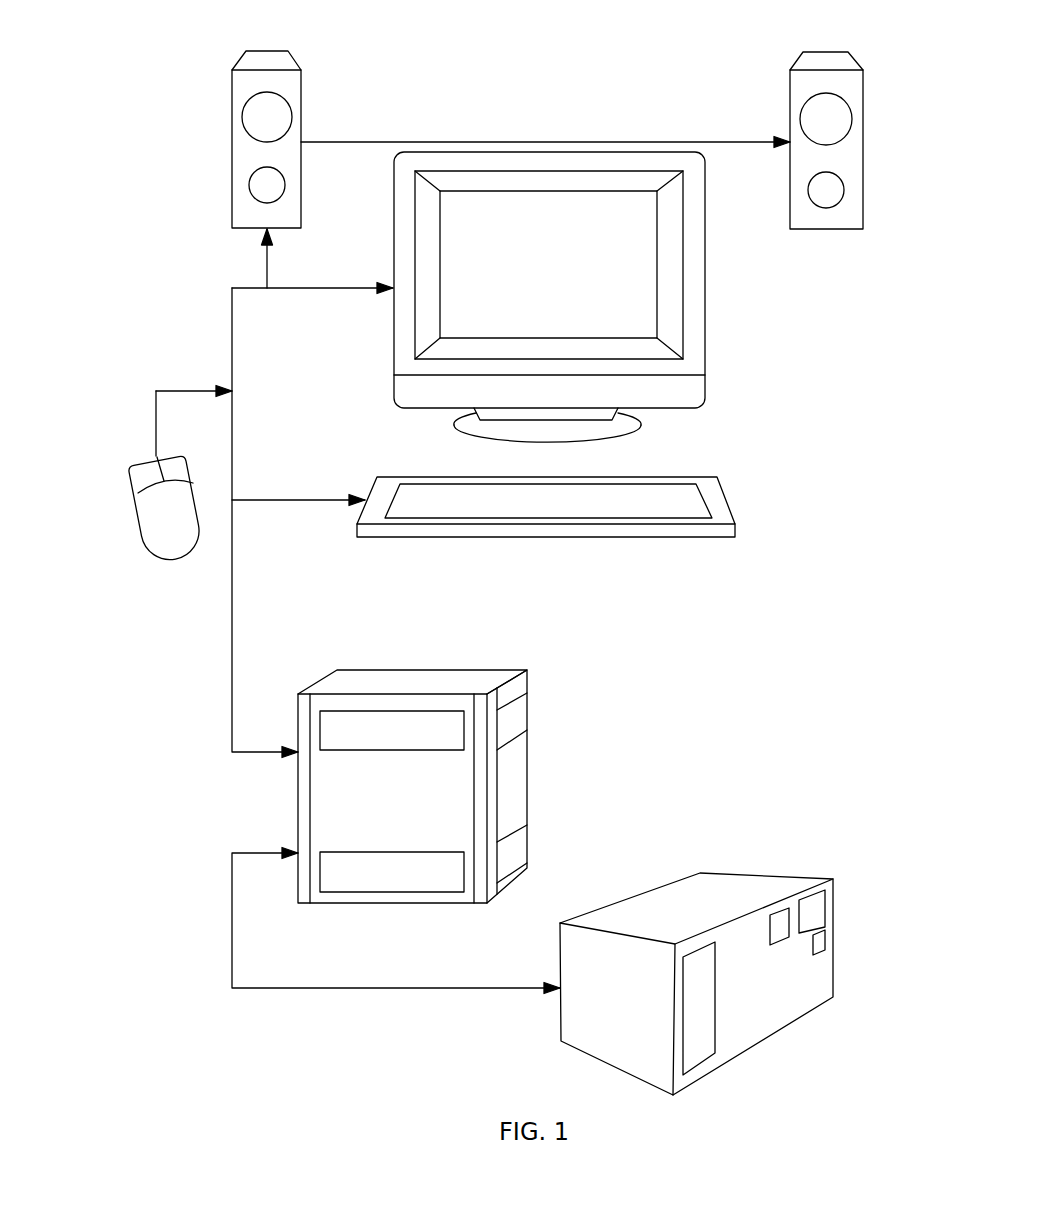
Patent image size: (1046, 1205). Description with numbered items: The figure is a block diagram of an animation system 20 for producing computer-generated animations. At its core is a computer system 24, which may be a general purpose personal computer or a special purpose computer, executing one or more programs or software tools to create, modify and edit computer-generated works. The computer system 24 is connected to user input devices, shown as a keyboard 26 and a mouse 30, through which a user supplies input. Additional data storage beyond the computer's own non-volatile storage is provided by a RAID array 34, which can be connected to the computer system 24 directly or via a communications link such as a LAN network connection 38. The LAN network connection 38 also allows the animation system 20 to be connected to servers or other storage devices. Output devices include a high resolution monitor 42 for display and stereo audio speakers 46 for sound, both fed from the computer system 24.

The animation system 20 is at (806, 301).
The computer system 24 is at (518, 684).
The keyboard 26 is at (737, 512).
The mouse 30 is at (143, 532).
The RAID array 34 is at (747, 873).
The LAN network connection 38 is at (298, 762).
The high resolution monitor 42 is at (645, 286).
The stereo audio speakers 46 is at (298, 66).